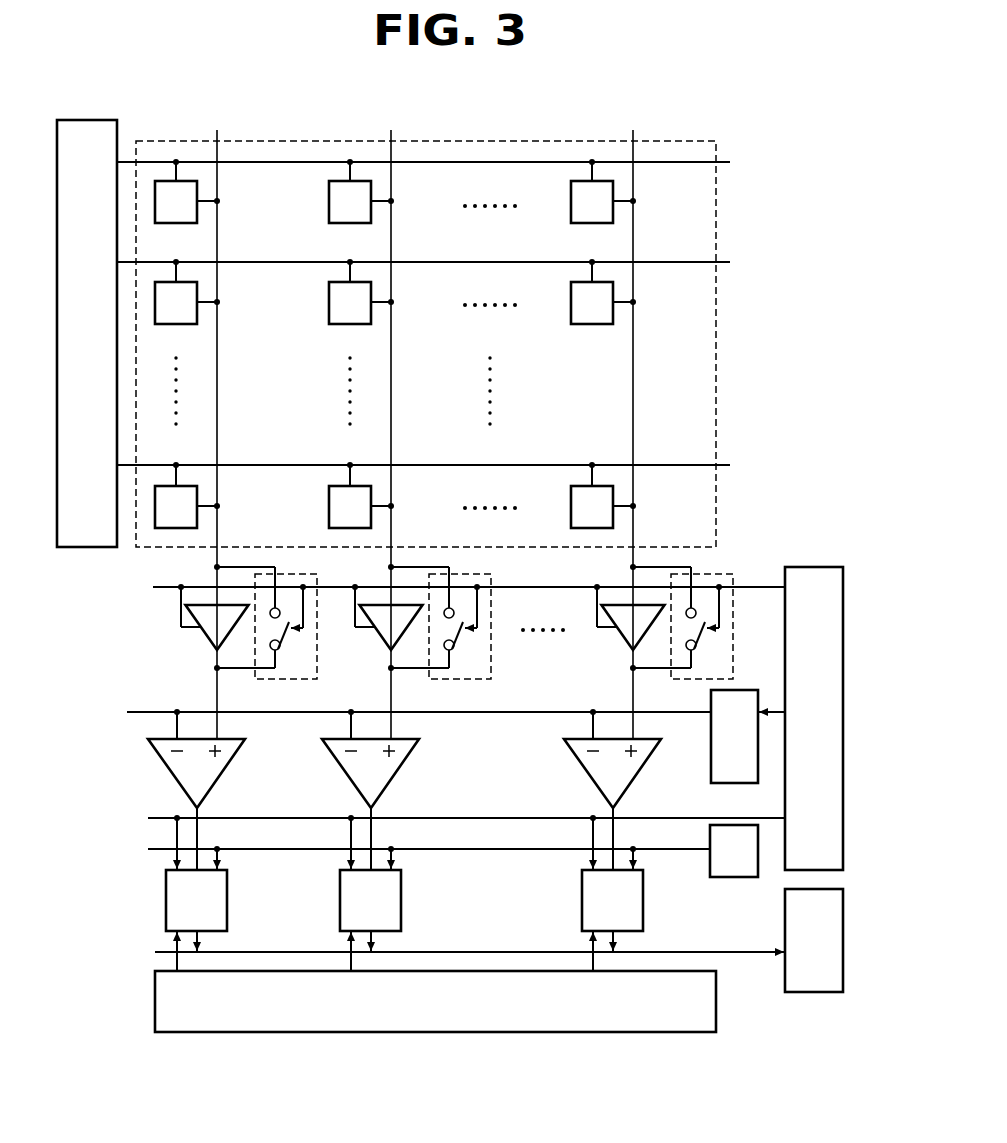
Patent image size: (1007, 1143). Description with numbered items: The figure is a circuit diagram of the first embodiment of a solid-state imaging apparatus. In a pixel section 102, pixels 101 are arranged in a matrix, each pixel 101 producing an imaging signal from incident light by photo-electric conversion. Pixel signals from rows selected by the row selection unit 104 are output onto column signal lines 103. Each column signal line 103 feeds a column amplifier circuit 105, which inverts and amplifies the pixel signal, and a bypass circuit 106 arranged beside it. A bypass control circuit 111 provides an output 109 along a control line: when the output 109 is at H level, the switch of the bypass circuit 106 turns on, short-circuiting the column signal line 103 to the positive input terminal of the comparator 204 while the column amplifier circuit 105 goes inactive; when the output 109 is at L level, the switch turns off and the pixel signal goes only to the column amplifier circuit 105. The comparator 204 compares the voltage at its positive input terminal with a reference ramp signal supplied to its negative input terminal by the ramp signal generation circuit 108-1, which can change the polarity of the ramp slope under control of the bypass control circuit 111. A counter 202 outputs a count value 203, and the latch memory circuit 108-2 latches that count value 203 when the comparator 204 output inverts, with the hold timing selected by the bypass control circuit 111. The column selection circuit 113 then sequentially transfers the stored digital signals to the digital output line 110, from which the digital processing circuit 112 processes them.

The pixel 101 is at (200, 189).
The pixel section 102 is at (718, 192).
The column signal line 103 is at (219, 400).
The row selection unit 104 is at (90, 120).
The column amplifier circuit 105 is at (203, 638).
The bypass circuit 106 is at (340, 658).
The ramp signal generation circuit 108-1 is at (711, 748).
The latch memory circuit 108-2 is at (166, 893).
The output 109 is at (758, 587).
The digital output line 110 is at (550, 951).
The bypass control circuit 111 is at (822, 567).
The digital processing circuit 112 is at (815, 993).
The column selection circuit 113 is at (155, 1000).
The counter 202 is at (745, 878).
The count value 203 is at (672, 851).
The comparator 204 is at (175, 777).